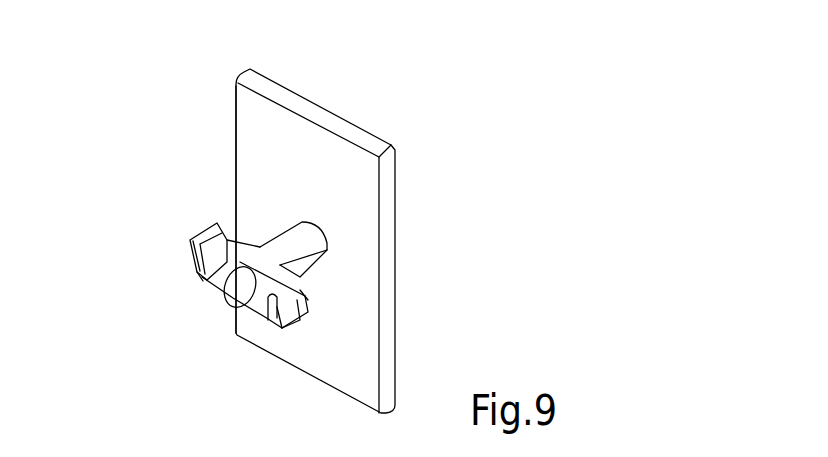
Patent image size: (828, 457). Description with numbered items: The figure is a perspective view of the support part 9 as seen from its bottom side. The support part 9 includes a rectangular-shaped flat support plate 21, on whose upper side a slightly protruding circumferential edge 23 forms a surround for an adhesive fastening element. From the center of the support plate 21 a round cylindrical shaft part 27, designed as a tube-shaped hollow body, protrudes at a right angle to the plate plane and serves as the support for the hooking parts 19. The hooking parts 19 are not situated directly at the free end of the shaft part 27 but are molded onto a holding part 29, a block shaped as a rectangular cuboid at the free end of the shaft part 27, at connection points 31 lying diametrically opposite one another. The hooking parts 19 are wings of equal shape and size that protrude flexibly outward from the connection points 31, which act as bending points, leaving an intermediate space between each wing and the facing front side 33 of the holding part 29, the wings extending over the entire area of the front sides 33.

The support part 9 is at (497, 147).
The support plate 21 is at (347, 348).
The circumferential edge 23 is at (395, 193).
The shaft part 27 is at (290, 242).
The holding part 29 is at (327, 250).
The hooking part 19 is at (190, 237).
The connection point 31 is at (203, 280).
The front side 33 is at (198, 262).